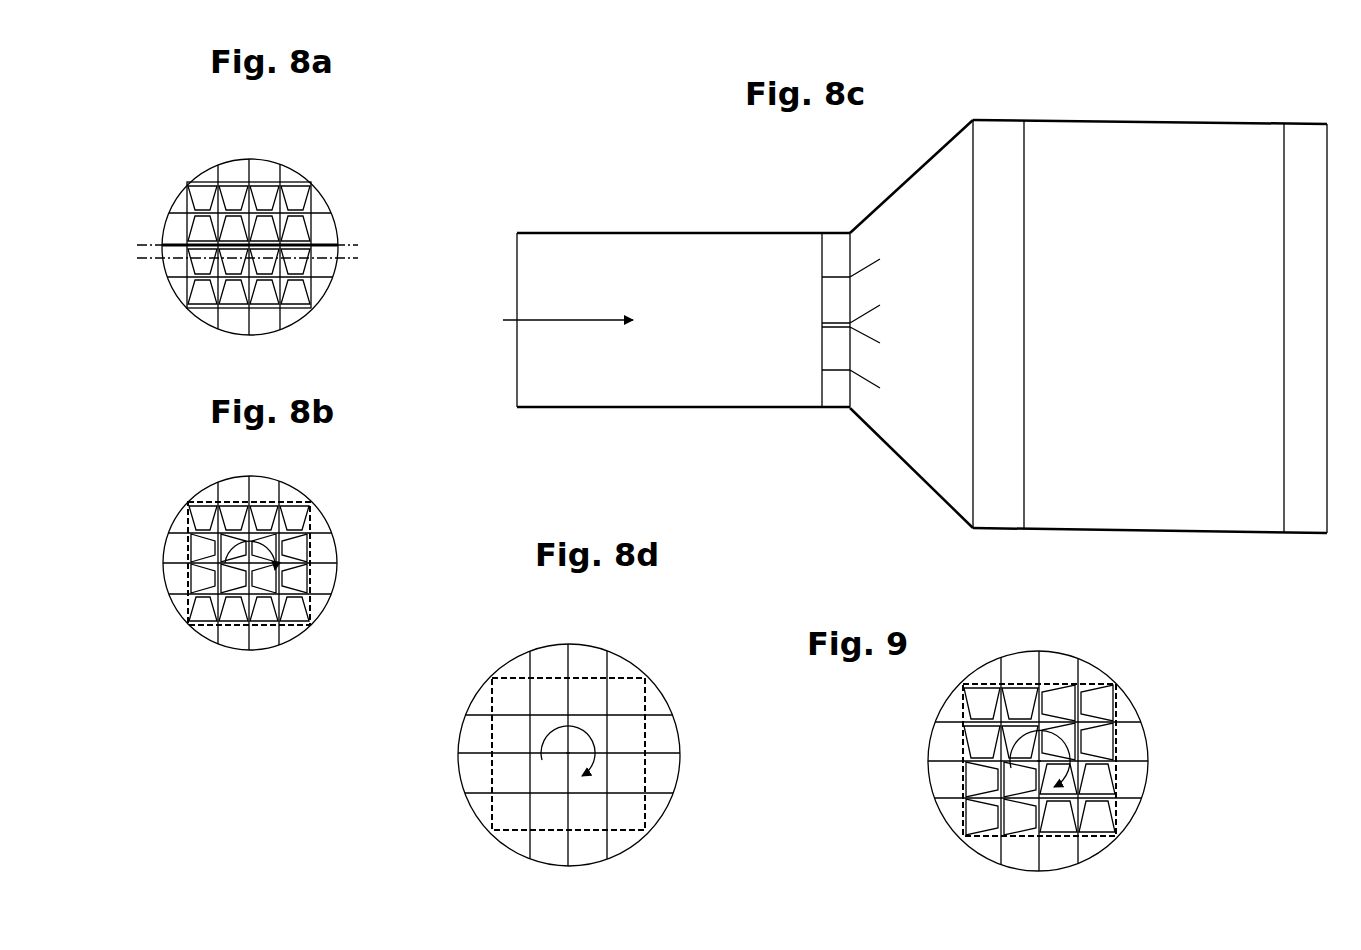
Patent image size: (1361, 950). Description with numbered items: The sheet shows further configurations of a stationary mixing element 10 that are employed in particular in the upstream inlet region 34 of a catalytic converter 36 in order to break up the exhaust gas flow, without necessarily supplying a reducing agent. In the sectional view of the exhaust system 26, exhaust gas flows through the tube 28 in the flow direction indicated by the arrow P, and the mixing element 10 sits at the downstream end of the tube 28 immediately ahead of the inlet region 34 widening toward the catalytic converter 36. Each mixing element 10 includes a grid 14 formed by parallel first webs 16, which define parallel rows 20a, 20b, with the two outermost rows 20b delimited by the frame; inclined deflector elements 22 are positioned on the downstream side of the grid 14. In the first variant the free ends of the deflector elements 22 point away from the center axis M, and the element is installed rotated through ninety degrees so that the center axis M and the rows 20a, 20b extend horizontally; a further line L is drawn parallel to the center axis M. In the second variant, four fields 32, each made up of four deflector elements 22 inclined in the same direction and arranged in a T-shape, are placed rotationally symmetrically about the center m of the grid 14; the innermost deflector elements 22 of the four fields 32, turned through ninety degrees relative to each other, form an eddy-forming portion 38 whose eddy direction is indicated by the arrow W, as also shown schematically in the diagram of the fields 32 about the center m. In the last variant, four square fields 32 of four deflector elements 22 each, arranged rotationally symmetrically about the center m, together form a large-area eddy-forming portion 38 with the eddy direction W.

In FIG. 8A, the mixing element 10 is at (318, 175).
In FIG. 8B, the mixing element 10 is at (325, 503).
In FIG. 8C, the mixing element 10 is at (832, 262).
In FIG. 8D, the mixing element 10 is at (670, 810).
In FIG. 9, the mixing element 10 is at (1152, 703).
In FIG. 8A, the grid 14 is at (208, 178).
In FIG. 8B, the grid 14 is at (315, 592).
In FIG. 9, the grid 14 is at (1063, 680).
In FIG. 8A, the first webs 16 is at (187, 212).
In FIG. 8A, the deflector elements 22 is at (278, 200).
In FIG. 9, the deflector elements 22 is at (978, 697).
In FIG. 8A, the rows 20a is at (315, 233).
In FIG. 8A, the outermost rows 20b is at (180, 265).
In FIG. 8A, the center axis M is at (347, 245).
In FIG. 8A, the offset line L is at (343, 262).
In FIG. 8C, the exhaust system 26 is at (708, 203).
In FIG. 8C, the tube 28 is at (633, 382).
In FIG. 8B, the fields 32 is at (208, 502).
In FIG. 8D, the fields 32 is at (518, 677).
In FIG. 9, the fields 32 is at (972, 685).
In FIG. 8C, the upstream inlet region 34 is at (912, 425).
In FIG. 8C, the catalytic converter 36 is at (1165, 505).
In FIG. 8B, the eddy-forming portion 38 is at (193, 537).
In FIG. 8D, the eddy-forming portion 38 is at (637, 675).
In FIG. 9, the eddy-forming portion 38 is at (1118, 743).
In FIG. 8C, the flow direction arrow P is at (567, 320).
In FIG. 8D, the eddy direction arrow W is at (595, 747).
In FIG. 9, the eddy direction arrow W is at (1083, 757).
In FIG. 8B, the center of the grid m is at (243, 565).
In FIG. 8D, the center of the grid m is at (568, 755).
In FIG. 9, the center of the grid m is at (1033, 767).